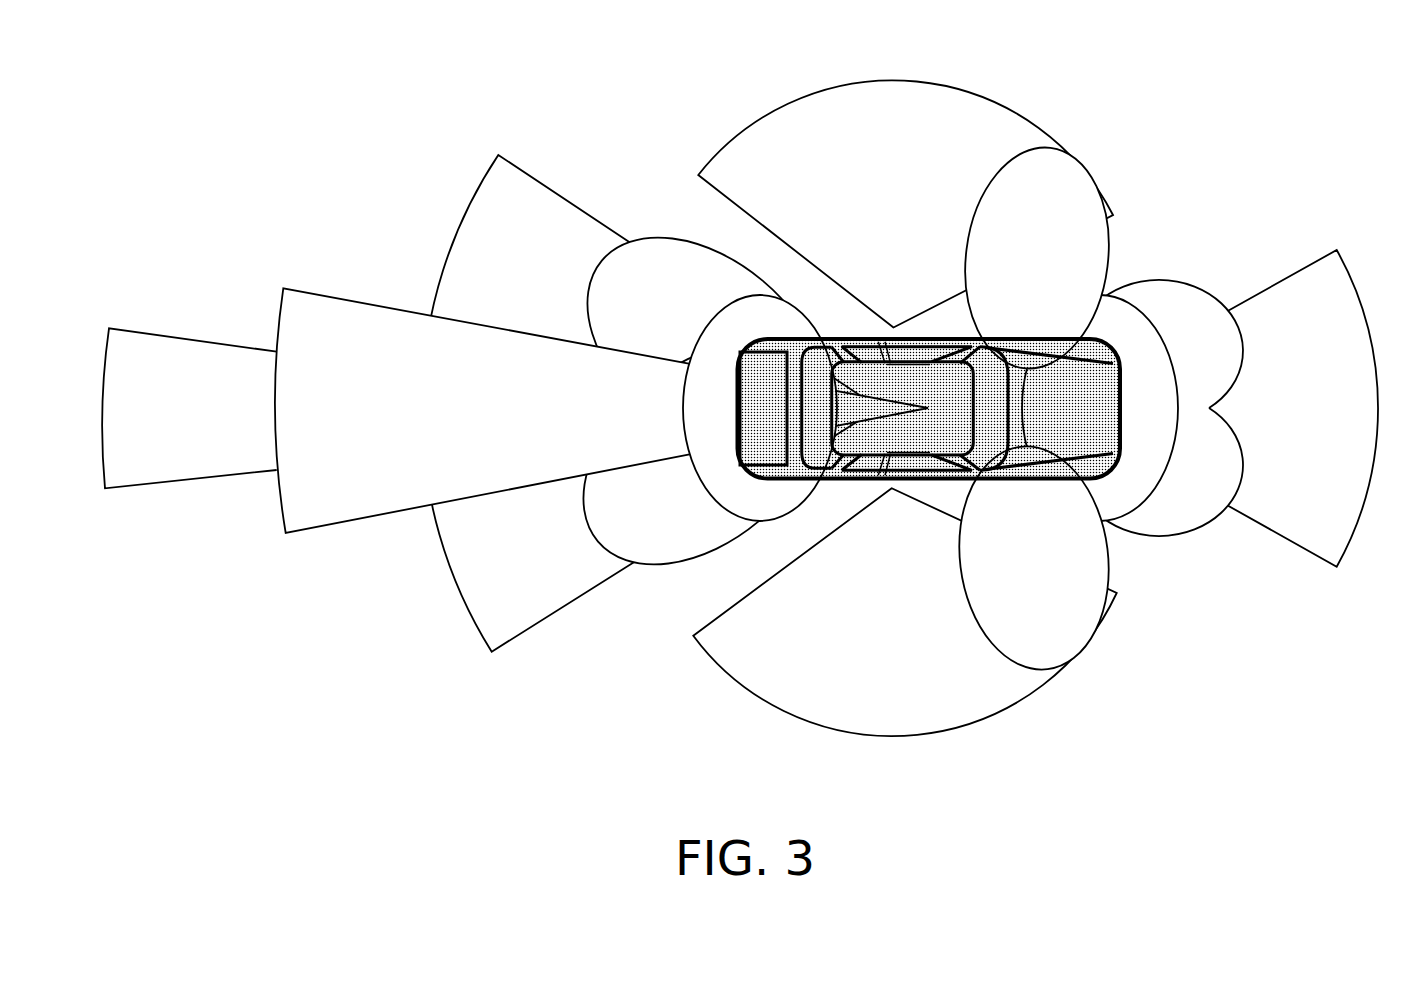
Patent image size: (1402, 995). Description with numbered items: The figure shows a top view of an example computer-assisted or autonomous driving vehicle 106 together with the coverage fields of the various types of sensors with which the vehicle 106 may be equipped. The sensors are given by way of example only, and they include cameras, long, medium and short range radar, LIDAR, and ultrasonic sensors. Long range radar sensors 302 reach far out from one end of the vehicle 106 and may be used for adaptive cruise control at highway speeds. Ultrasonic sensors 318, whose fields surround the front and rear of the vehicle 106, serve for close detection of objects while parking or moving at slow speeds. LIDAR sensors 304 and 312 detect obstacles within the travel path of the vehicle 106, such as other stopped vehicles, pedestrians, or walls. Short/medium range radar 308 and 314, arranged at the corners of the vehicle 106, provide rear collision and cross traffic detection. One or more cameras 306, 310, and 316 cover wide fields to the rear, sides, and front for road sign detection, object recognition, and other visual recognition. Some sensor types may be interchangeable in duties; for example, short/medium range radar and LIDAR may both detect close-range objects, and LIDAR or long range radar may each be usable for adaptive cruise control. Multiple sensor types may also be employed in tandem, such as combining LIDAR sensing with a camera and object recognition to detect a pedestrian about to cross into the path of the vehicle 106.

The vehicle 106 is at (1063, 408).
The long range radar sensors 302 is at (139, 348).
The LIDAR sensors 304 is at (315, 325).
The cameras 306 is at (487, 215).
The short/medium range radar 308 is at (641, 280).
The cameras 310 is at (805, 135).
The LIDAR sensors 312 is at (1081, 198).
The short/medium range radar 314 is at (1191, 322).
The cameras 316 is at (1304, 297).
The ultrasonic sensors 318 is at (750, 494).